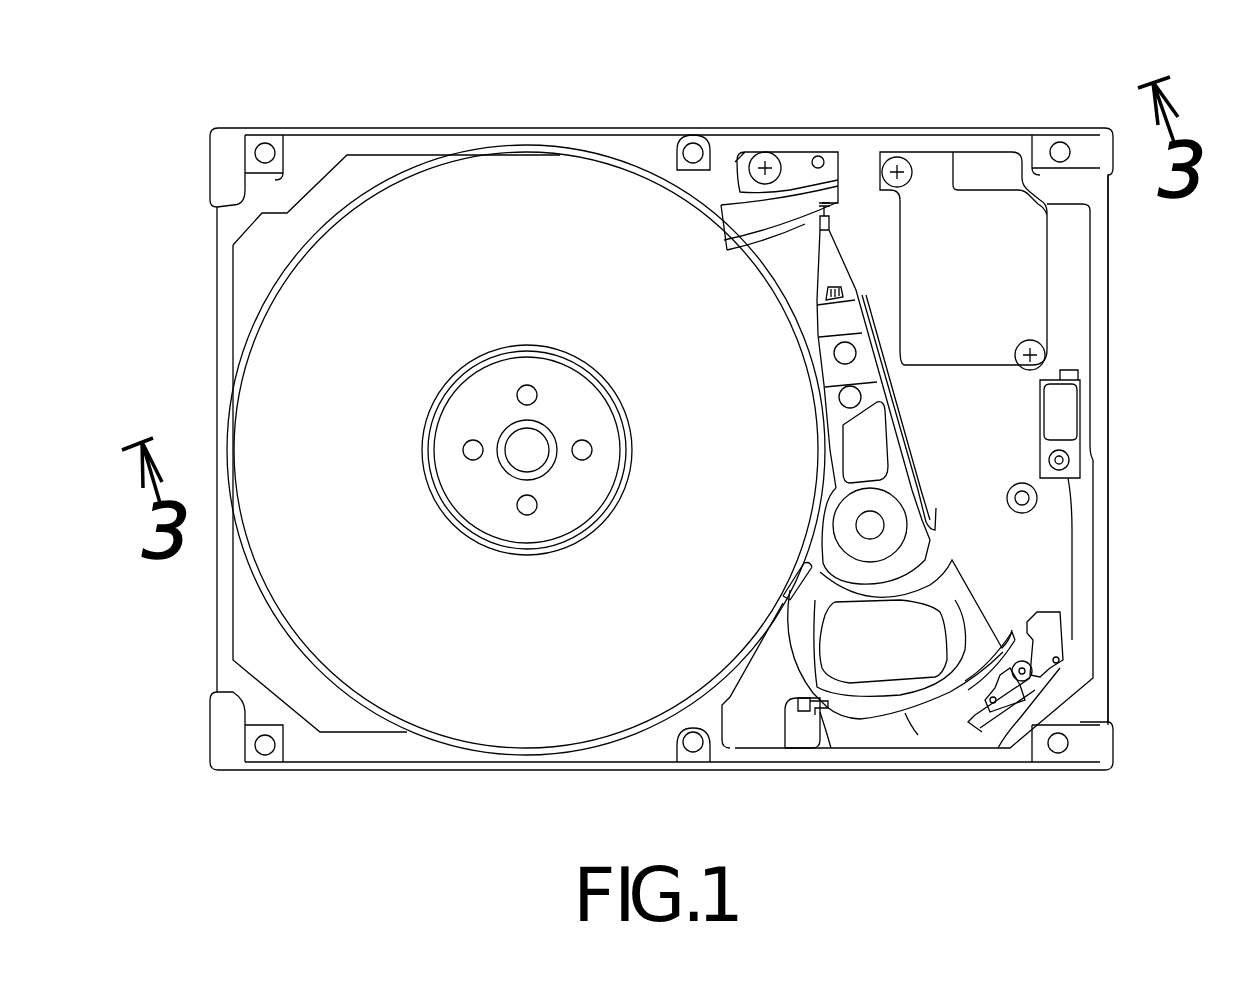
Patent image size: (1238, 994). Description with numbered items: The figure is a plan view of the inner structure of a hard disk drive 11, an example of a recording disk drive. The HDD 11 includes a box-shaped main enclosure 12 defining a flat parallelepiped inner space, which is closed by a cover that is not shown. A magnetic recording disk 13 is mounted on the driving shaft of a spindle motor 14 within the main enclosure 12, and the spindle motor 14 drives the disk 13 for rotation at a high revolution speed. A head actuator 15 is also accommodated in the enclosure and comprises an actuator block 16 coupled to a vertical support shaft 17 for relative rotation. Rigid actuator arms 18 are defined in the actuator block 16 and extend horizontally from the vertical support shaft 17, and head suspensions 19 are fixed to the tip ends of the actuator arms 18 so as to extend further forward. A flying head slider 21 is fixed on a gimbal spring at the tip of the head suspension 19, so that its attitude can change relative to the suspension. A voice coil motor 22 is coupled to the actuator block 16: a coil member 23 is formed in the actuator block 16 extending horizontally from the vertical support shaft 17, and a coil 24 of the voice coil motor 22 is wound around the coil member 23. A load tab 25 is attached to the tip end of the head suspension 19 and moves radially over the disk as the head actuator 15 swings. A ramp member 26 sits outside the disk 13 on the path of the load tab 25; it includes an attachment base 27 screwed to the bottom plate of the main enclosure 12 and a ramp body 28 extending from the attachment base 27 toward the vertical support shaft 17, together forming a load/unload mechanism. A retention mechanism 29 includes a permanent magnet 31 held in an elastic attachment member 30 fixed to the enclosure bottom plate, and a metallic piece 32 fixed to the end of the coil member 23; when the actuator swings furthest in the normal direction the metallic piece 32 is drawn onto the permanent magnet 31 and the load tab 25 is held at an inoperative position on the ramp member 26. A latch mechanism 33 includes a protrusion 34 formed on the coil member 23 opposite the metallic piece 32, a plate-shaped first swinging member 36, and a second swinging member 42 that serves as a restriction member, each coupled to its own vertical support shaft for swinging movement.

The hard disk drive 11 is at (295, 112).
The main enclosure 12 is at (218, 322).
The magnetic recording disk 13 is at (232, 428).
The spindle motor 14 is at (535, 476).
The head actuator 15 is at (784, 555).
The actuator block 16 is at (930, 538).
The vertical support shaft 17 is at (858, 525).
The actuator arm 18 is at (828, 422).
The head suspension 19 is at (806, 282).
The flying head slider 21 is at (832, 224).
The voice coil motor 22 is at (768, 660).
The coil member 23 is at (934, 724).
The coil 24 is at (828, 655).
The load tab 25 is at (832, 210).
The ramp member 26 is at (745, 152).
The attachment base 27 is at (785, 152).
The ramp body 28 is at (746, 240).
The retention mechanism 29 is at (793, 744).
The attachment member 30 is at (802, 750).
The permanent magnet 31 is at (798, 708).
The metallic piece 32 is at (820, 718).
The latch mechanism 33 is at (1096, 645).
The protrusion 34 is at (1010, 636).
The first swinging member 36 is at (1090, 538).
The second swinging member 42 is at (1046, 610).